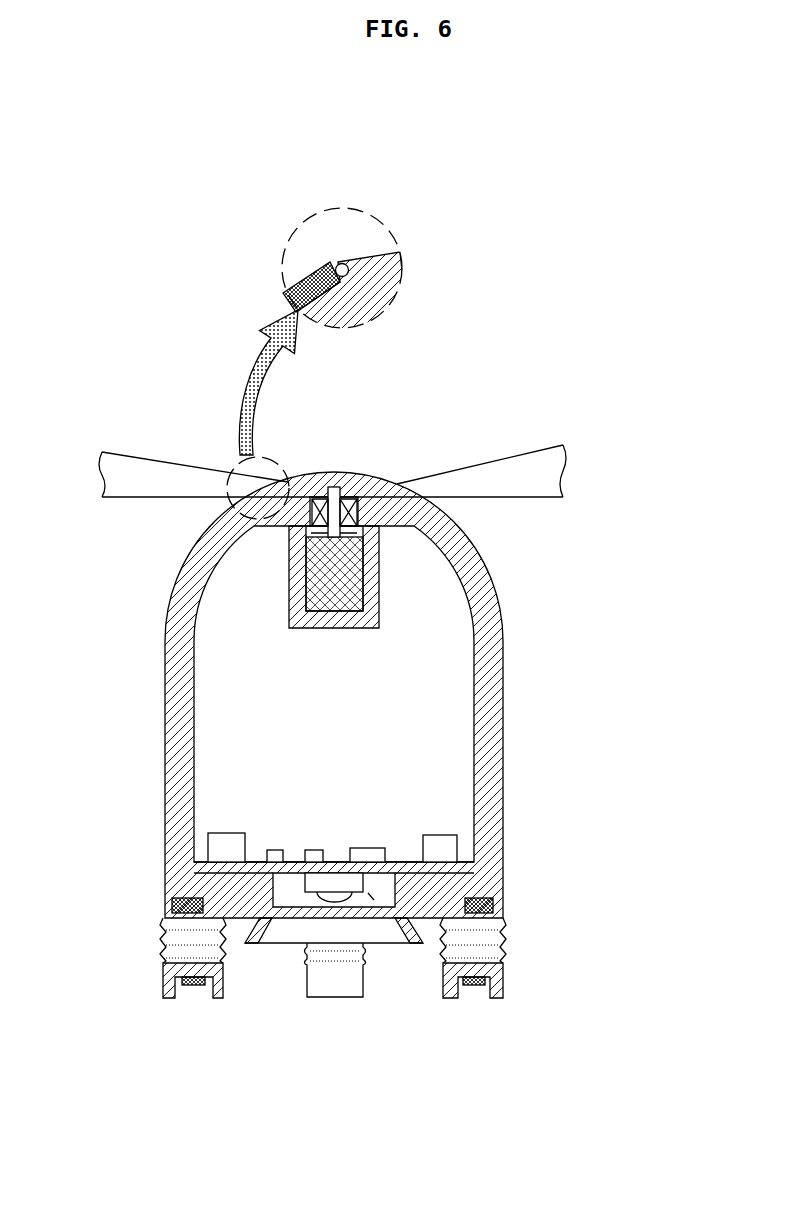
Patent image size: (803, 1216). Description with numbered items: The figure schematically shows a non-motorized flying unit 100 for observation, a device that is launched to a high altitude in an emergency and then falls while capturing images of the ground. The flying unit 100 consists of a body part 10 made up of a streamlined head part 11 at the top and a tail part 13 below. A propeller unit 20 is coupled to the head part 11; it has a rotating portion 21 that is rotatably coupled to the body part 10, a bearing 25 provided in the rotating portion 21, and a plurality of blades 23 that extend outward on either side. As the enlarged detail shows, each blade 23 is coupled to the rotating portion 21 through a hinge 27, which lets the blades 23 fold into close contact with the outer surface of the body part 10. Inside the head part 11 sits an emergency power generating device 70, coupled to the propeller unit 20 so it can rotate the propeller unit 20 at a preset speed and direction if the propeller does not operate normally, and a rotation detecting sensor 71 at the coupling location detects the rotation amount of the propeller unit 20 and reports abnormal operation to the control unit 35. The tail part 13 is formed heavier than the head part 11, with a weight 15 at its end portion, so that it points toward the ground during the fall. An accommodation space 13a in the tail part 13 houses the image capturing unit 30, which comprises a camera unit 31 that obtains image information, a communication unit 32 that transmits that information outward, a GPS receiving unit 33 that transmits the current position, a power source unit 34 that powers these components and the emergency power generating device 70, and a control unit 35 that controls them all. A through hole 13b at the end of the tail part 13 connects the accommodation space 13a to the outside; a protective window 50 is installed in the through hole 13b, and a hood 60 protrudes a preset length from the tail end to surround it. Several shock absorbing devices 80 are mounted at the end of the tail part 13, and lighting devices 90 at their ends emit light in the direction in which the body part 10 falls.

The non-motorized flying unit 100 is at (587, 348).
The body part 10 is at (528, 719).
The head part 11 is at (472, 534).
The tail part 13 is at (503, 868).
The accommodation space 13a is at (267, 807).
The through hole 13b is at (270, 916).
The weight 15 is at (494, 905).
The propeller unit 20 is at (419, 452).
The rotating portion 21 is at (331, 488).
The blades 23 is at (162, 472).
The bearing 25 is at (346, 502).
The hinges 27 is at (338, 263).
The image capturing unit 30 is at (388, 908).
The camera unit 31 is at (356, 888).
The communication unit 32 is at (278, 848).
The GPS receiving unit 33 is at (316, 848).
The power source unit 34 is at (222, 843).
The control unit 35 is at (440, 843).
The protective window 50 is at (304, 946).
The hood 60 is at (368, 893).
The emergency power generating device 70 is at (312, 570).
The rotation detecting sensor 71 is at (298, 528).
The shock absorbing devices 80 is at (506, 936).
The lighting devices 90 is at (474, 993).